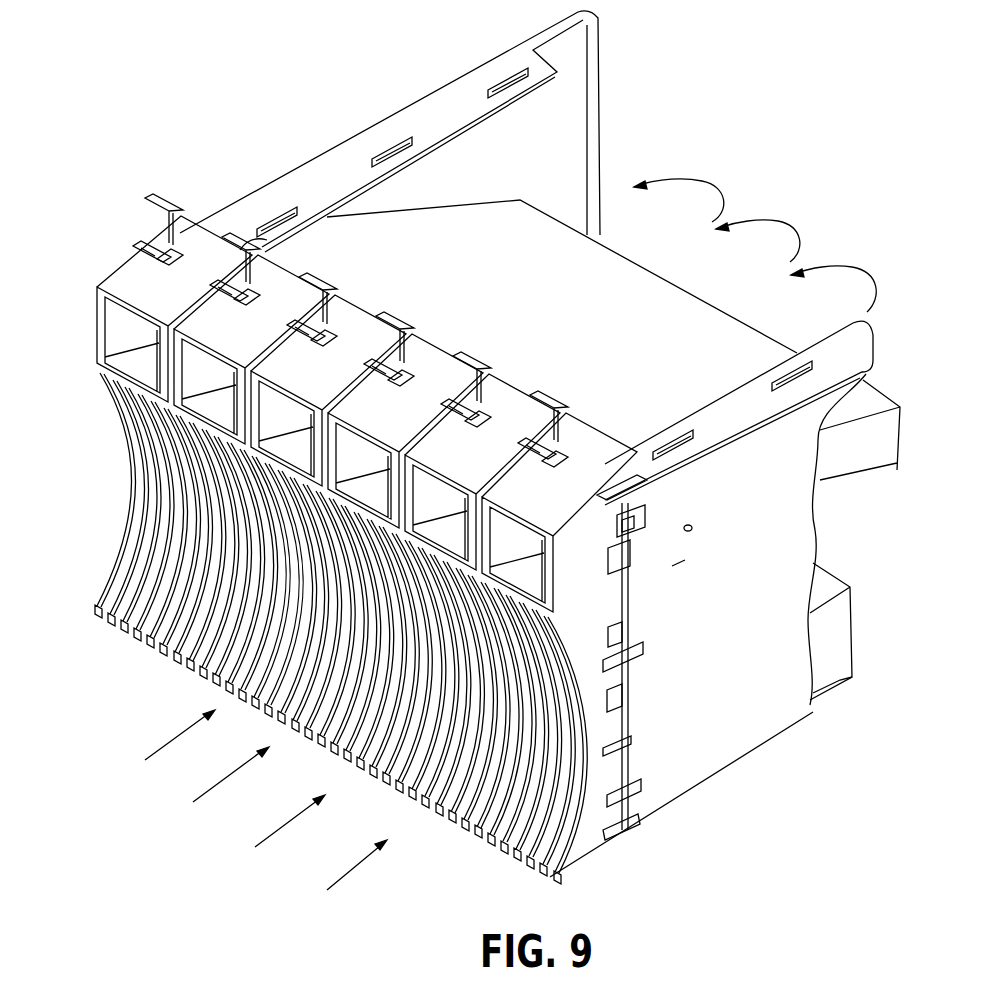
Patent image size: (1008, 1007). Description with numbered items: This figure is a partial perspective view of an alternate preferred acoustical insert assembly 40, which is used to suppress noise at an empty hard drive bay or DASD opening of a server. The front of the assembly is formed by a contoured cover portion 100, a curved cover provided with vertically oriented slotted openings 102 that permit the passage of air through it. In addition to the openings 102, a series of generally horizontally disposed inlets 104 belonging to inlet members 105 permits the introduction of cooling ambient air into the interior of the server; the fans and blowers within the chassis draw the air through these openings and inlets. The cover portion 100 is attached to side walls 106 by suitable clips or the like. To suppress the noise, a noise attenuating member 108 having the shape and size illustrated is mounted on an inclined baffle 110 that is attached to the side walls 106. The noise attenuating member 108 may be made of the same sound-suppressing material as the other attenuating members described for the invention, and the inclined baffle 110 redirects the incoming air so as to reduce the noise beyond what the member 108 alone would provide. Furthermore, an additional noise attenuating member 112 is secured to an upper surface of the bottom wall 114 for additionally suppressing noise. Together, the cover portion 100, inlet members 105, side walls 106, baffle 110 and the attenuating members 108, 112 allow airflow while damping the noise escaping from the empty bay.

The acoustical insert assembly 40 is at (255, 146).
The contoured cover portion 100 is at (130, 507).
The vertically oriented slotted openings 102 is at (190, 545).
The inlets 104 is at (205, 380).
The inlet members 105 is at (262, 322).
The side walls 106 is at (367, 143).
The noise attenuating member 108 is at (620, 293).
The inclined baffle 110 is at (857, 480).
The additional noise attenuating member 112 is at (843, 613).
The bottom wall 114 is at (837, 687).